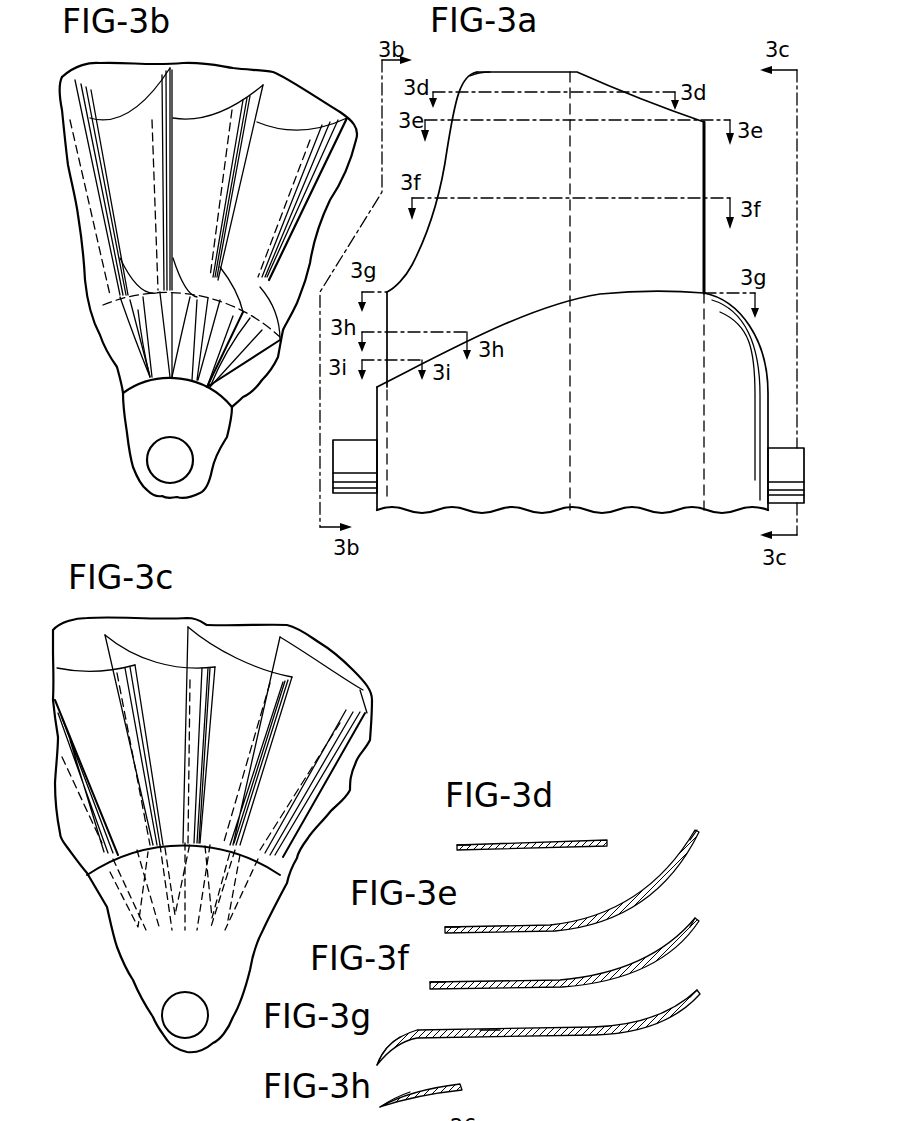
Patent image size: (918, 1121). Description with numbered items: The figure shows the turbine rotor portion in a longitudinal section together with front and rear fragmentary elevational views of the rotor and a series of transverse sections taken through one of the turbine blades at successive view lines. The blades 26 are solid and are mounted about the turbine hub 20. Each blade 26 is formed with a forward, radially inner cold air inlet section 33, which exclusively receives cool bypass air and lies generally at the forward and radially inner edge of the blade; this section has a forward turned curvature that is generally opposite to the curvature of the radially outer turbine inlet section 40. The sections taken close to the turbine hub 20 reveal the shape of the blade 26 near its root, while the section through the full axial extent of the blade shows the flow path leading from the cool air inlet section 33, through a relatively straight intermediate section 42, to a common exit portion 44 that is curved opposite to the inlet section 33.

In FIG. 3B, the turbine hub 20 is at (143, 403).
In FIG. 3A, the turbine hub 20 is at (607, 377).
In FIG. 3C, the turbine hub 20 is at (150, 976).
In FIG. 3B, the turbine blade 26 is at (212, 172).
In FIG. 3A, the turbine blade 26 is at (612, 250).
In FIG. 3C, the turbine blade 26 is at (255, 715).
In FIG. 3D, the turbine blade 26 is at (563, 842).
In FIG. 3E, the turbine blade 26 is at (557, 923).
In FIG. 3F, the turbine blade 26 is at (590, 968).
In FIG. 3G, the turbine blade 26 is at (567, 1030).
In FIG. 3H, the turbine blade 26 is at (457, 1083).
In FIG. 3B, the cold air inlet section 33 is at (147, 318).
In FIG. 3A, the cold air inlet section 33 is at (395, 348).
In FIG. 3C, the cold air inlet section 33 is at (168, 933).
In FIG. 3G, the cold air inlet section 33 is at (388, 1038).
In FIG. 3H, the cold air inlet section 33 is at (393, 1095).
In FIG. 3B, the turbine inlet section 40 is at (278, 133).
In FIG. 3A, the turbine inlet section 40 is at (496, 82).
In FIG. 3D, the turbine inlet section 40 is at (478, 855).
In FIG. 3E, the turbine inlet section 40 is at (473, 923).
In FIG. 3C, the intermediate section 42 is at (260, 785).
In FIG. 3F, the intermediate section 42 is at (473, 980).
In FIG. 3G, the intermediate section 42 is at (490, 1030).
In FIG. 3A, the exit portion 44 is at (692, 165).
In FIG. 3E, the exit portion 44 is at (667, 873).
In FIG. 3F, the exit portion 44 is at (682, 942).
In FIG. 3G, the exit portion 44 is at (673, 1015).